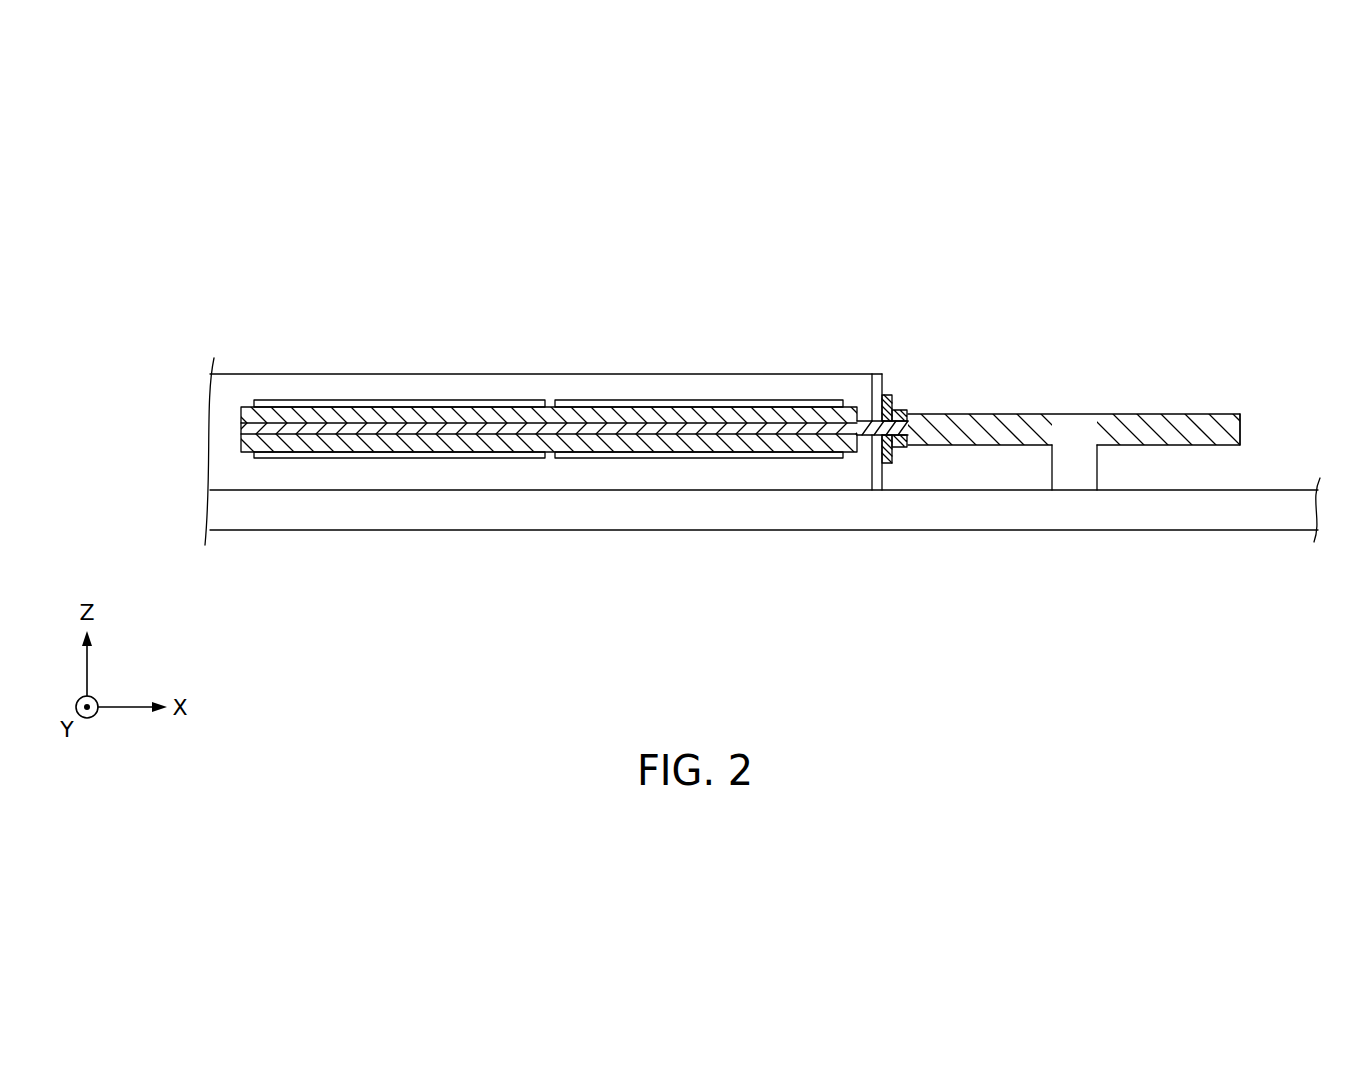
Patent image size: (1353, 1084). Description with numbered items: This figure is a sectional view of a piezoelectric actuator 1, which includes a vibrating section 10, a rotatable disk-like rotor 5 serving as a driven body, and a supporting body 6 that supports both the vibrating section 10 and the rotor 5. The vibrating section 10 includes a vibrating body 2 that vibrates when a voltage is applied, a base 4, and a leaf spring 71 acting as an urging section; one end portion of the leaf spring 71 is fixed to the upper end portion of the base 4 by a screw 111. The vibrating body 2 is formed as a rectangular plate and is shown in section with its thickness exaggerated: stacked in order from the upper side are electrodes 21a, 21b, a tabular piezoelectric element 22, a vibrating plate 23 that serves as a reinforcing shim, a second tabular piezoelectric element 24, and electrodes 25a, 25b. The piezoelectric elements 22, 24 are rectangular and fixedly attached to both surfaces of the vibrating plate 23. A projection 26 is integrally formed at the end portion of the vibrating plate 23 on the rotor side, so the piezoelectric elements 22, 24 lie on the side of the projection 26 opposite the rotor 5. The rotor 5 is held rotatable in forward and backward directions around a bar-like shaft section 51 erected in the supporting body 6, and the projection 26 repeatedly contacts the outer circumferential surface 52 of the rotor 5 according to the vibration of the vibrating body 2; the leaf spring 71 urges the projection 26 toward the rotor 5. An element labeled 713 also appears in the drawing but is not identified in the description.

The piezoelectric actuator 1 is at (1095, 257).
The vibrating section 10 is at (602, 372).
The vibrating body 2 is at (728, 399).
The base 4 is at (528, 387).
The electrode 21a is at (677, 400).
The electrode 21b is at (413, 400).
The piezoelectric element 22 is at (790, 413).
The vibrating plate 23 is at (585, 432).
The piezoelectric element 24 is at (733, 443).
The electrode 25a is at (662, 457).
The electrode 25b is at (427, 455).
The projection 26 is at (867, 420).
The leaf spring 71 is at (888, 398).
The screw 111 is at (898, 418).
The terminal 713 is at (898, 445).
The rotor 5 is at (1197, 413).
The shaft section 51 is at (1077, 433).
The outer circumferential surface 52 is at (1240, 423).
The supporting body 6 is at (1205, 512).